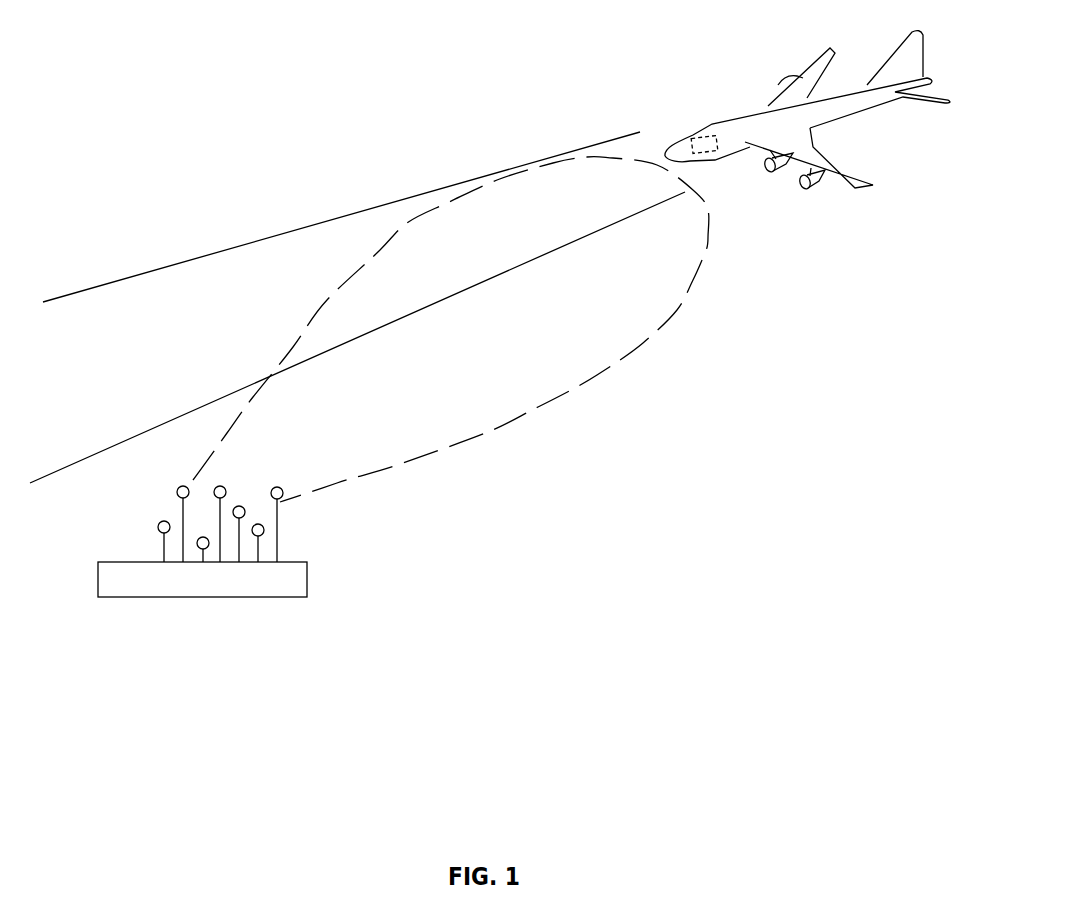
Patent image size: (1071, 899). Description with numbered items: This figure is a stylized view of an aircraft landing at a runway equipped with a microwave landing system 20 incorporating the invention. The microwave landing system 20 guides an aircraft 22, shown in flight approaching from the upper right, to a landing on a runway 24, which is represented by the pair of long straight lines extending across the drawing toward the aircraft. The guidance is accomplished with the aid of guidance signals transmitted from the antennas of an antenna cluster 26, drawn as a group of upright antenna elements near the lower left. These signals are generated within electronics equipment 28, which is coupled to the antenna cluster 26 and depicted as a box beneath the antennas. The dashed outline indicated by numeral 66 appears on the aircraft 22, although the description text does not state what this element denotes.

The microwave landing system 20 is at (662, 421).
The aircraft 22 is at (720, 118).
The runway 24 is at (425, 193).
The antenna cluster 26 is at (278, 530).
The electronics equipment 28 is at (195, 597).
The transponder on aircraft 66 is at (715, 147).